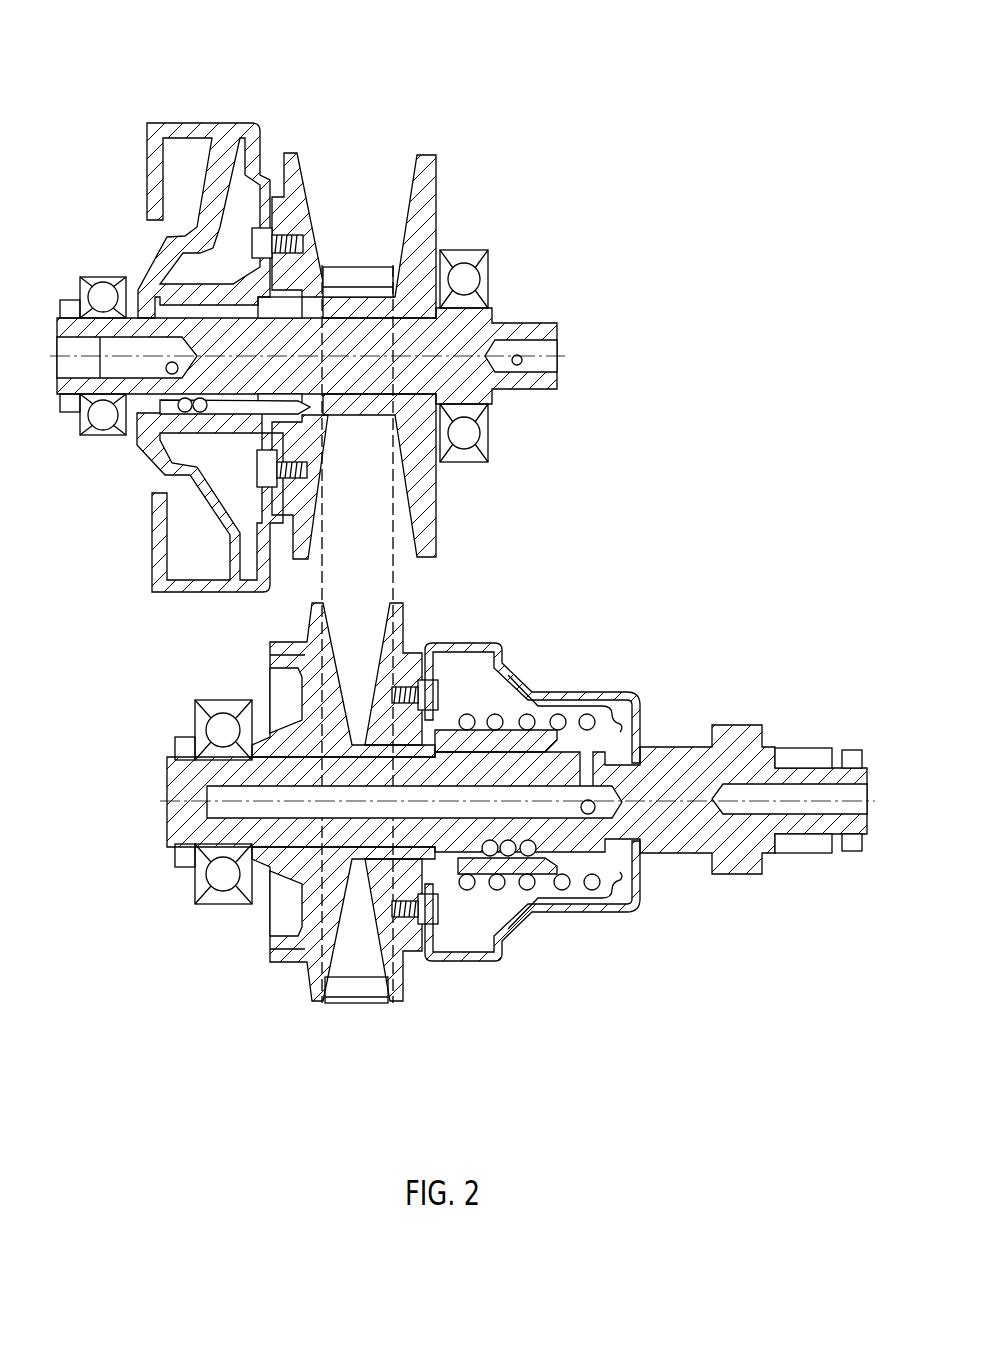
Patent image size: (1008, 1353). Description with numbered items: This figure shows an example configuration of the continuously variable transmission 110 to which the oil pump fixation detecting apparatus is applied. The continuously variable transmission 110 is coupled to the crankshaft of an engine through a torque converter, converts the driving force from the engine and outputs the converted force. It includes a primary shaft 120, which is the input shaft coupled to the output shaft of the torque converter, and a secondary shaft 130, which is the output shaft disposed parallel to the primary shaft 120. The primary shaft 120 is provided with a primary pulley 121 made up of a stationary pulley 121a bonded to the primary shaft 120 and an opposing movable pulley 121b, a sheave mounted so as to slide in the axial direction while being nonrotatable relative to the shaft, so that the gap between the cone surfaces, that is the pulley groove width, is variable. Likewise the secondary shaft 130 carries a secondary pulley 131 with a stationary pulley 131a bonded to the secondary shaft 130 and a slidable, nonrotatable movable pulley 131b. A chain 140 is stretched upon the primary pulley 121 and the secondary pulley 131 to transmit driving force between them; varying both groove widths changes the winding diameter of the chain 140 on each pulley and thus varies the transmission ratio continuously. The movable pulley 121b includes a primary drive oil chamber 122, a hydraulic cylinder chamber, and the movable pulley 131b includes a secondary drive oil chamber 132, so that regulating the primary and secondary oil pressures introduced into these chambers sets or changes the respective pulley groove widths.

The continuously variable transmission 110 is at (608, 103).
The primary shaft 120 is at (545, 322).
The primary pulley 121 is at (347, 300).
The stationary pulley 121a is at (412, 173).
The movable pulley 121b is at (305, 325).
The primary drive oil chamber 122 is at (270, 188).
The secondary shaft 130 is at (798, 748).
The secondary pulley 131 is at (345, 867).
The stationary pulley 131a is at (313, 1007).
The movable pulley 131b is at (400, 1007).
The secondary drive oil chamber 132 is at (453, 670).
The chain 140 is at (354, 265).